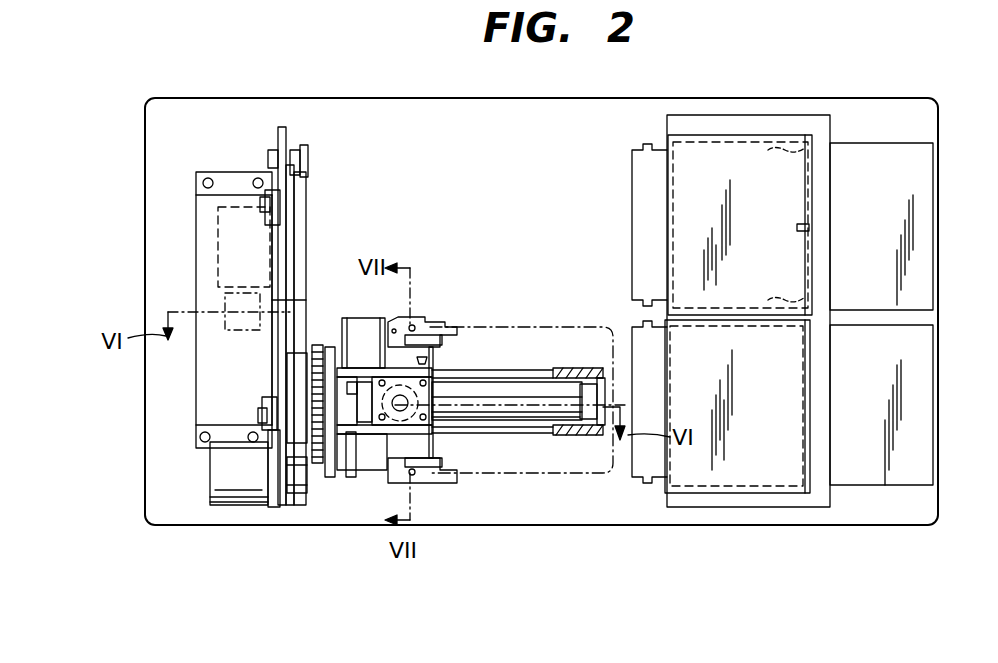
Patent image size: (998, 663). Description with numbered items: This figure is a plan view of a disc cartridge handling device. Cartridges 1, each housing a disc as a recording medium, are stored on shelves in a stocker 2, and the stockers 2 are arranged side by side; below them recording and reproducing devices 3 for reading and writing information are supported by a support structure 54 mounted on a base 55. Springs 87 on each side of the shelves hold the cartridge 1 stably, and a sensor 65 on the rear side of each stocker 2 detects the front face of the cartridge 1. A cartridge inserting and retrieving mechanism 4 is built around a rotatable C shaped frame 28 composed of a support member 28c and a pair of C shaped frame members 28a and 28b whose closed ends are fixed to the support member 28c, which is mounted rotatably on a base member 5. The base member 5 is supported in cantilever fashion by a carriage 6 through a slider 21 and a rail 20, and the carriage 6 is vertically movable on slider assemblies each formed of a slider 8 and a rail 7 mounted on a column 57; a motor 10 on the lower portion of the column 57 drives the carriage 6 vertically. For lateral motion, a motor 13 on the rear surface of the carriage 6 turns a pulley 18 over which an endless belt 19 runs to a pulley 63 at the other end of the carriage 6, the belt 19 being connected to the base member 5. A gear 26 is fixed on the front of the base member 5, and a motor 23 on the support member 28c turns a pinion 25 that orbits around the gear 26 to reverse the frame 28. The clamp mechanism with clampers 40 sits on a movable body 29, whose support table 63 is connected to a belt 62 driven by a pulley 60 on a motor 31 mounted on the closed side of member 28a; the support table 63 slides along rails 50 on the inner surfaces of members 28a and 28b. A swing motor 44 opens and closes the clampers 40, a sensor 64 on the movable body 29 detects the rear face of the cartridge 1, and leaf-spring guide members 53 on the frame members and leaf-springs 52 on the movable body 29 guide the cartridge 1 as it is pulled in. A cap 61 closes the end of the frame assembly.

The cartridge 1 is at (548, 330).
The stocker 2 is at (805, 265).
The recording and reproducing device 3 is at (925, 285).
The cartridge inserting and retrieving mechanism 4 is at (437, 318).
The base member 5 is at (300, 300).
The carriage 6 is at (284, 128).
The rail 7 is at (262, 203).
The slider 8 is at (270, 190).
The motor 10 is at (218, 262).
The motor 13 is at (222, 507).
The pulley 18 is at (305, 490).
The endless belt 19 is at (306, 207).
The rail 20 is at (300, 233).
The slider 21 is at (270, 392).
The motor 23 is at (362, 436).
The pinion 25 is at (318, 465).
The gear 26 is at (290, 382).
The C shaped frame 28 is at (518, 437).
The frame member 28a is at (515, 368).
The frame member 28b is at (497, 437).
The support member 28c is at (329, 478).
The movable body 29 is at (420, 436).
The motor 31 is at (352, 320).
The clamper 40 is at (432, 318).
The swing motor 44 is at (433, 440).
The rail 50 is at (575, 366).
The leaf-spring 52 is at (443, 338).
The guide member 53 is at (580, 366).
The support structure 54 is at (832, 500).
The base 55 is at (925, 527).
The column 57 is at (205, 348).
The pulley 60 is at (348, 388).
The end cap 61 is at (605, 437).
The belt 62 is at (540, 437).
The pulley / support table 63 is at (310, 160).
The sensor 64 is at (427, 358).
The sensor 65 is at (812, 228).
The spring 87 is at (795, 288).